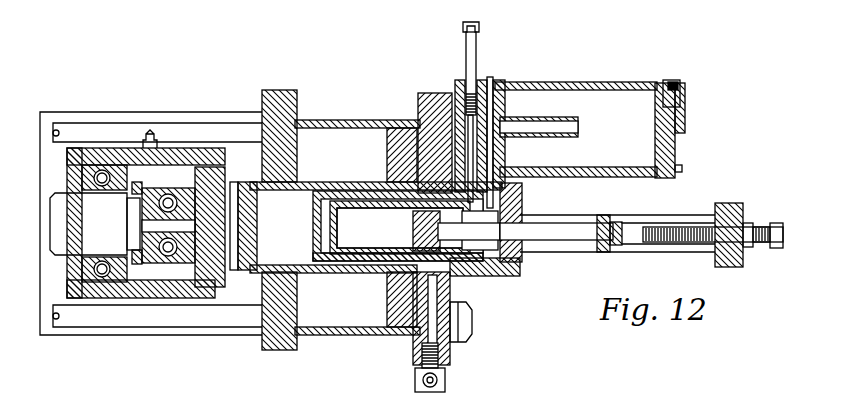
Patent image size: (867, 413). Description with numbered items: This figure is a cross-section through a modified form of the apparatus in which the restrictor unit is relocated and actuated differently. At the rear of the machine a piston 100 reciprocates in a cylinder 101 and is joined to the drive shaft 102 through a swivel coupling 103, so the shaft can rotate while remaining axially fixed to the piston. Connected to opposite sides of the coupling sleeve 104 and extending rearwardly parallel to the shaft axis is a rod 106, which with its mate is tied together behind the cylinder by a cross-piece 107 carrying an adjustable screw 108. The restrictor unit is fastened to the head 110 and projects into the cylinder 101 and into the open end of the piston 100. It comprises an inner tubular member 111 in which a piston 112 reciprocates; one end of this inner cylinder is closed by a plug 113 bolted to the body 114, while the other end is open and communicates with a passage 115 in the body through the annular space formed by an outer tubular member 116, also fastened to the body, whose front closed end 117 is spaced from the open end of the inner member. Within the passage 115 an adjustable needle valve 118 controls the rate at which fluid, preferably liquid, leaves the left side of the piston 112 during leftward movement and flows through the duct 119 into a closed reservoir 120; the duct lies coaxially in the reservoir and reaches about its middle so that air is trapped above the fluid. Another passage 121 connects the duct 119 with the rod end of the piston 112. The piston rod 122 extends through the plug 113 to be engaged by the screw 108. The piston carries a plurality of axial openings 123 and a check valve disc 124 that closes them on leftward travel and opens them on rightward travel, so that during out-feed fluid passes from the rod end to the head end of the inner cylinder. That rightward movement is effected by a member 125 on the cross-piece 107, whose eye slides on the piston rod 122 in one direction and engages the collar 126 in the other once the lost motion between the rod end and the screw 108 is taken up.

The piston 100 is at (387, 150).
The cylinder 101 is at (355, 120).
The drive shaft 102 is at (95, 224).
The swivel coupling 103 is at (103, 142).
The coupling sleeve 104 is at (182, 150).
The rod 106 is at (560, 253).
The cross-piece 107 is at (725, 205).
The adjustable screw 108 is at (775, 248).
The head 110 is at (432, 92).
The inner tubular member 111 is at (373, 253).
The piston 112 is at (413, 233).
The plug 113 is at (510, 277).
The body 114 is at (488, 277).
The passage 115 is at (503, 193).
The outer tubular member 116 is at (318, 247).
The closed end 117 is at (313, 217).
The adjustable needle valve 118 is at (475, 47).
The duct 119 is at (537, 128).
The closed reservoir 120 is at (612, 82).
The passage 121 is at (502, 153).
The piston rod 122 is at (555, 230).
The openings 123 is at (470, 230).
The check valve disc 124 is at (420, 212).
The member 125 is at (603, 253).
The collar 126 is at (617, 218).